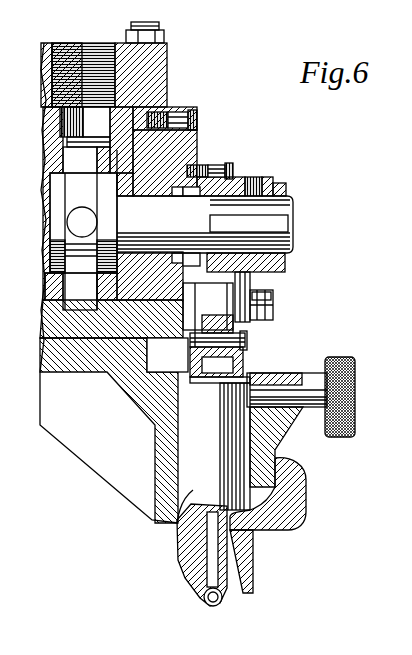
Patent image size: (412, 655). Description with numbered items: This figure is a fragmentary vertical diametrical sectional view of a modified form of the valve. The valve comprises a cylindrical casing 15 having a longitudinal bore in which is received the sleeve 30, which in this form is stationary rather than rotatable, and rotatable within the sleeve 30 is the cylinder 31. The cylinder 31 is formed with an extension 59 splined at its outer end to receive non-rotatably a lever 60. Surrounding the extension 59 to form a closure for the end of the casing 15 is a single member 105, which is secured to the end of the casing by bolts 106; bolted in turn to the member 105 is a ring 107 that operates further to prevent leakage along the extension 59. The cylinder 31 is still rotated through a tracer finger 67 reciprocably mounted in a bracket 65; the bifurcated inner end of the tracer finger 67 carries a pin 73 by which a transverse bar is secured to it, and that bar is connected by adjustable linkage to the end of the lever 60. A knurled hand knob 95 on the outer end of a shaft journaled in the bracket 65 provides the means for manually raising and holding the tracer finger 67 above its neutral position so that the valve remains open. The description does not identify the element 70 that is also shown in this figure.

The cylindrical casing 15 is at (167, 82).
The bolts 106 is at (175, 118).
The member 105 is at (198, 140).
The ring 107 is at (222, 163).
The lever 60 is at (287, 190).
The extension 59 is at (296, 228).
The sleeve 30 is at (52, 160).
The cylinder 31 is at (55, 223).
The pin 73 is at (253, 338).
The adjusting rod 70 is at (252, 362).
The knurled hand knob 95 is at (355, 400).
The bracket 65 is at (100, 360).
The tracer finger 67 is at (152, 522).